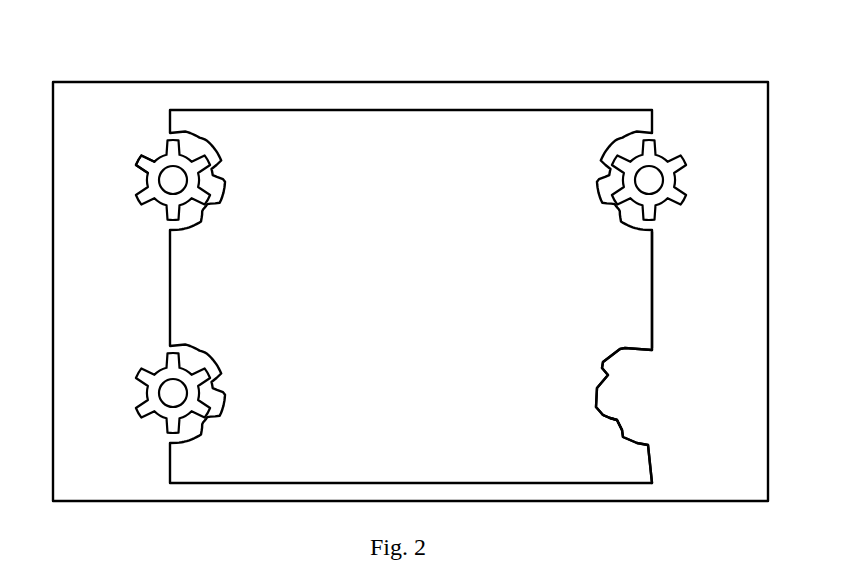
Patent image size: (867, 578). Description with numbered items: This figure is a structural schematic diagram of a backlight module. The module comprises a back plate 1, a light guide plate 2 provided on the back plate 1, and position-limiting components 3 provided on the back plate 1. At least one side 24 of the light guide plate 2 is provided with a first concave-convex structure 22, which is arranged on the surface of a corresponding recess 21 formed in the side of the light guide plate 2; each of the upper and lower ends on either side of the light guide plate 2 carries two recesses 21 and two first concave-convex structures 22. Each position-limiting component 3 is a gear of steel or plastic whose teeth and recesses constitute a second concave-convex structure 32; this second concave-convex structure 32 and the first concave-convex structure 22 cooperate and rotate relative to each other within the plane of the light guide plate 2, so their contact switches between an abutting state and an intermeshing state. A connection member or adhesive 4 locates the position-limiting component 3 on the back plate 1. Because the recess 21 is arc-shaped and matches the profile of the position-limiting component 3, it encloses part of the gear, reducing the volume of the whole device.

The back plate 1 is at (267, 73).
The light guide plate 2 is at (678, 258).
The recess 21 is at (659, 370).
The first concave-convex structure 22 is at (631, 418).
The side 24 is at (653, 291).
The position-limiting component 3 is at (138, 140).
The second concave-convex structure 32 is at (134, 158).
The connection member or adhesive 4 is at (154, 190).